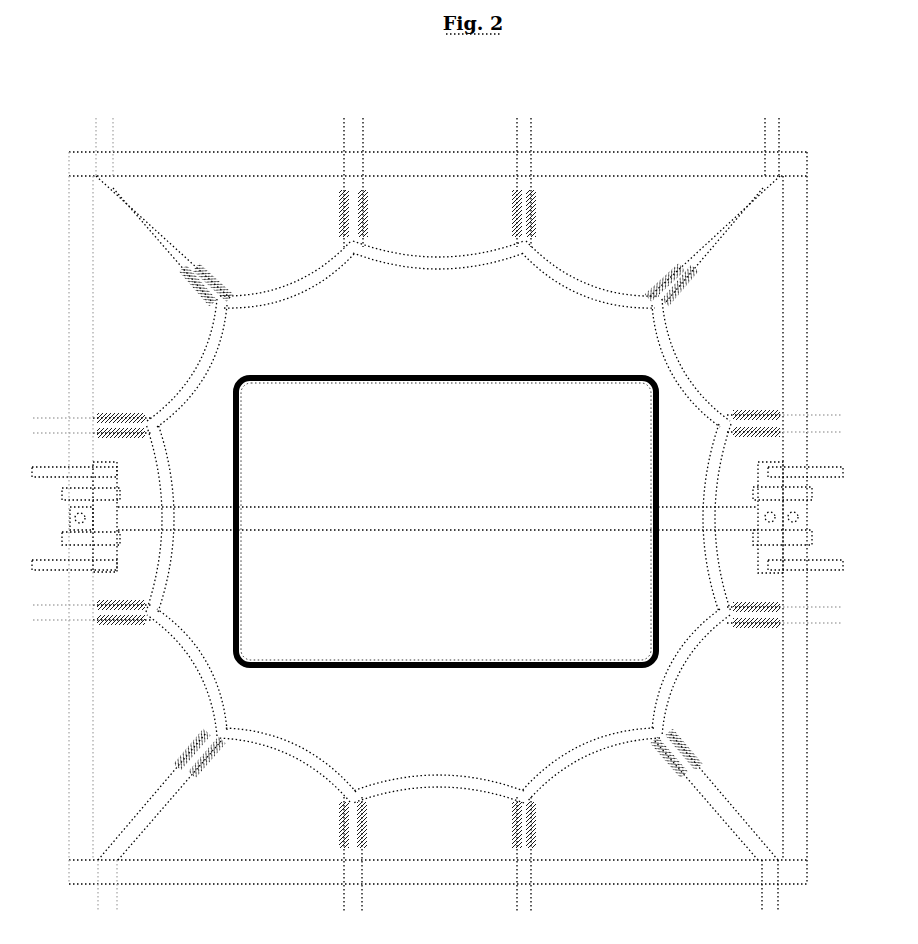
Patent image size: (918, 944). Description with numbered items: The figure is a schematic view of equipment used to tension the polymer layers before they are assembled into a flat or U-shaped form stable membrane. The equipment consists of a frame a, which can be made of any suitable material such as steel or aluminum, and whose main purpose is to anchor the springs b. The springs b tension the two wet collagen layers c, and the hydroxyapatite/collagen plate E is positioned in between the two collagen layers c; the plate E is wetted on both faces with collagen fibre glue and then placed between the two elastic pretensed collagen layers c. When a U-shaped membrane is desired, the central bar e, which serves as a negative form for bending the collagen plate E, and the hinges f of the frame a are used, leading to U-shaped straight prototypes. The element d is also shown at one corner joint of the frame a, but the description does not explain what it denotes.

The frame a is at (438, 515).
The springs b is at (438, 518).
The collagen layers c is at (438, 522).
The corner hinge joint d is at (206, 284).
The central bar e is at (437, 518).
The hinges f is at (437, 517).
The hydroxyapatite/collagen plate E is at (446, 521).